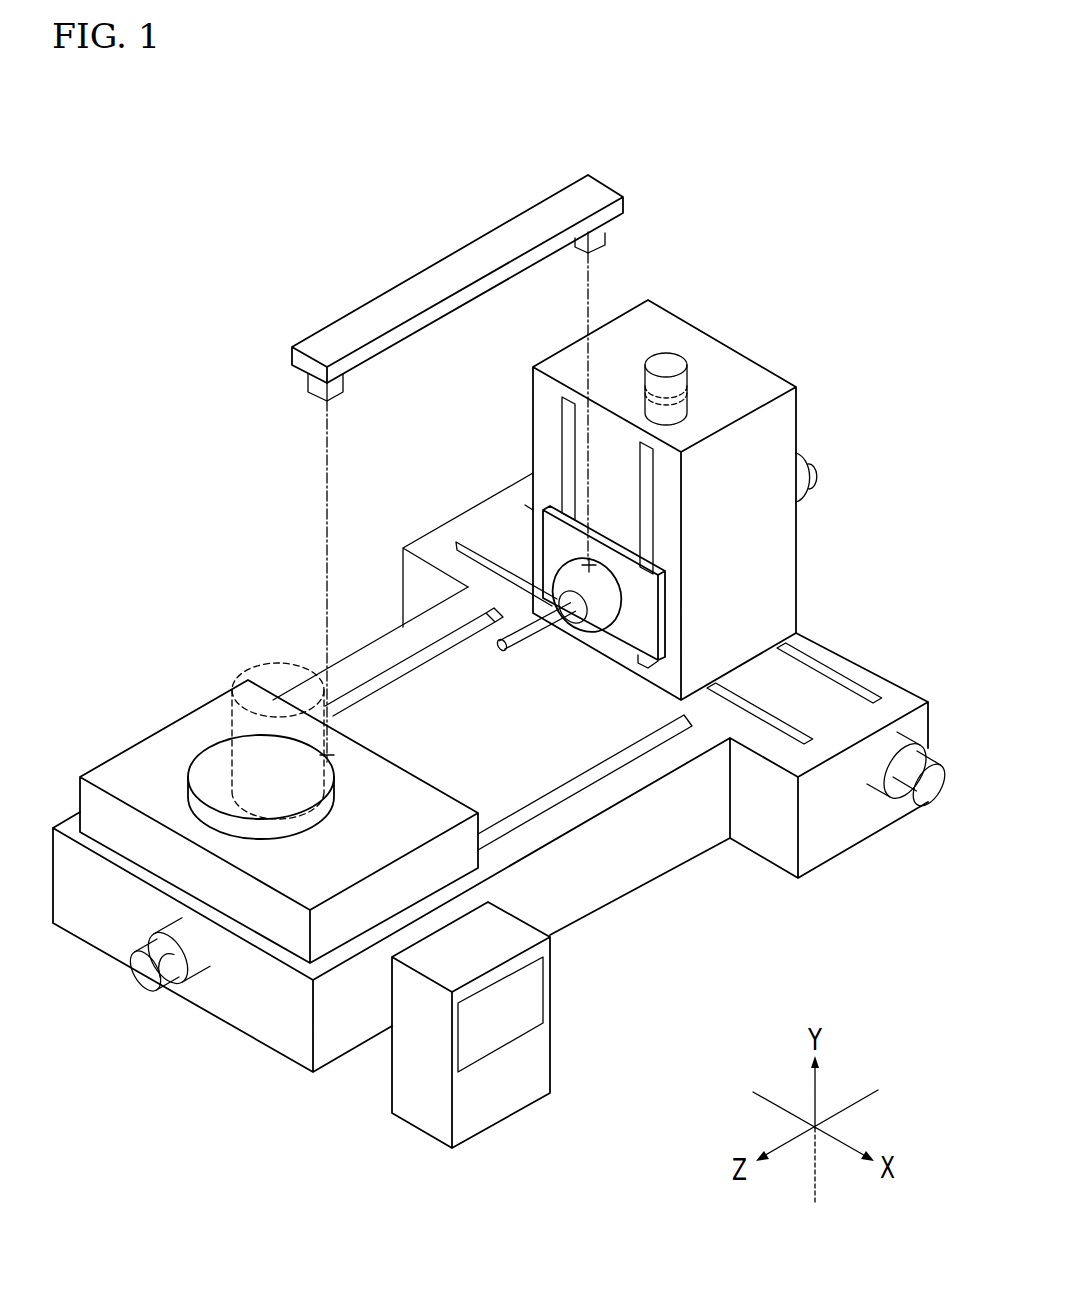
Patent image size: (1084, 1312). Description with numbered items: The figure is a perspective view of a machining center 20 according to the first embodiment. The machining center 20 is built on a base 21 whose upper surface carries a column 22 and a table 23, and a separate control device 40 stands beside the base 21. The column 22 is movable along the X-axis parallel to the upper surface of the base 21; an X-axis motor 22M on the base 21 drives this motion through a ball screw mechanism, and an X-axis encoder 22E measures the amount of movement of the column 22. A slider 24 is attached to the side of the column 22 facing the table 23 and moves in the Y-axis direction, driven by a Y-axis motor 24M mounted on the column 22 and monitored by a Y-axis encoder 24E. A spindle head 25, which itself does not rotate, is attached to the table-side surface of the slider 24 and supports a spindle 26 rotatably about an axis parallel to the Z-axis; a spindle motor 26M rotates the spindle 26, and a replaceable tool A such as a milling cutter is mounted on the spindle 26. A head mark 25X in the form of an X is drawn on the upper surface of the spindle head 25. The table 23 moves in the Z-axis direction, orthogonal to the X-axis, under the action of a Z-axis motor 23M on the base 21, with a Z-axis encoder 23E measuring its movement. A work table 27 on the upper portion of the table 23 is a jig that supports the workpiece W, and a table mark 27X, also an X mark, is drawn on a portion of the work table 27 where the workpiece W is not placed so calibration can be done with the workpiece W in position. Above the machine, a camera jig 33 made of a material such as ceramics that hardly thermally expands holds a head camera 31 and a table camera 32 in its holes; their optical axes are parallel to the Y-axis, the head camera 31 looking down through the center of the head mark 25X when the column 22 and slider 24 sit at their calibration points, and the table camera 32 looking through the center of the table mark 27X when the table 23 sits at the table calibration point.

The machining center 20 is at (810, 194).
The base 21 is at (670, 852).
The column 22 is at (797, 590).
The X-axis encoder 22E is at (913, 795).
The X-axis motor 22M is at (894, 780).
The table 23 is at (131, 748).
The Z-axis encoder 23E is at (144, 983).
The Z-axis motor 23M is at (190, 968).
The slider 24 is at (548, 543).
The Y-axis encoder 24E is at (672, 358).
The Y-axis motor 24M is at (684, 405).
The spindle head 25 is at (552, 600).
The head mark 25X is at (590, 563).
The spindle 26 is at (537, 585).
The spindle motor 26M is at (808, 490).
The work table 27 is at (214, 772).
The table mark 27X is at (332, 753).
The head camera 31 is at (603, 235).
The table camera 32 is at (343, 384).
The camera jig 33 is at (596, 192).
The control device 40 is at (548, 1065).
The tool A is at (489, 614).
The workpiece W is at (270, 815).